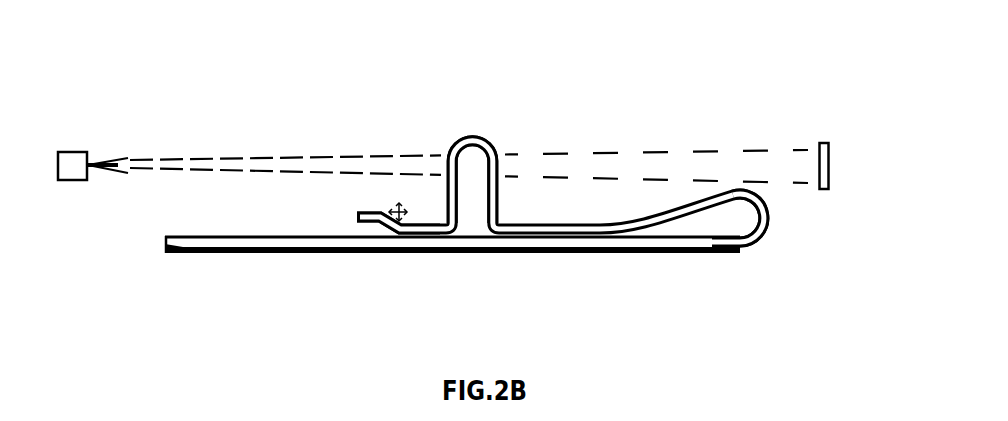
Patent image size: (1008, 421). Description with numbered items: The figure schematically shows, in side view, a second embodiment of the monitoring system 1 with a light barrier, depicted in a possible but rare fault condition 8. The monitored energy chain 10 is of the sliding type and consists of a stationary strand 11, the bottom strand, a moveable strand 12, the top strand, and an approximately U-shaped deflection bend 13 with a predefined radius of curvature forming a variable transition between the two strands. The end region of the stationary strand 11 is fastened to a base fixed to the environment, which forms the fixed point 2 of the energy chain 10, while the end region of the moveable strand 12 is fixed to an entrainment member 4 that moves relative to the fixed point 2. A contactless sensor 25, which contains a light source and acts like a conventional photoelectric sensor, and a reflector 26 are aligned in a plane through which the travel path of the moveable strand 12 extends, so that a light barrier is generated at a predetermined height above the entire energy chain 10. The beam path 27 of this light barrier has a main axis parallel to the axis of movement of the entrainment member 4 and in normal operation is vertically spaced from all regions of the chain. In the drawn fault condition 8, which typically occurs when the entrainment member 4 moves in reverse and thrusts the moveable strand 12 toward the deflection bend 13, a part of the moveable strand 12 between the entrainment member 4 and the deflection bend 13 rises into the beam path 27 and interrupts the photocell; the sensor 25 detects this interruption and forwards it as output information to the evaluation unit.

The monitoring system 1 is at (135, 90).
The fixed point 2 is at (175, 255).
The entrainment member 4 is at (376, 196).
The fault condition 8 is at (491, 119).
The energy chain 10 is at (250, 240).
The stationary strand 11 is at (424, 263).
The moveable strand 12 is at (587, 207).
The deflection bend 13 is at (770, 257).
The sensor 25 is at (73, 167).
The reflector 26 is at (829, 143).
The beam path 27 is at (701, 130).